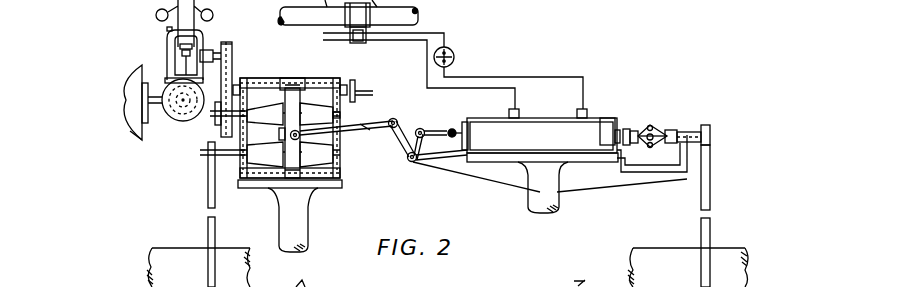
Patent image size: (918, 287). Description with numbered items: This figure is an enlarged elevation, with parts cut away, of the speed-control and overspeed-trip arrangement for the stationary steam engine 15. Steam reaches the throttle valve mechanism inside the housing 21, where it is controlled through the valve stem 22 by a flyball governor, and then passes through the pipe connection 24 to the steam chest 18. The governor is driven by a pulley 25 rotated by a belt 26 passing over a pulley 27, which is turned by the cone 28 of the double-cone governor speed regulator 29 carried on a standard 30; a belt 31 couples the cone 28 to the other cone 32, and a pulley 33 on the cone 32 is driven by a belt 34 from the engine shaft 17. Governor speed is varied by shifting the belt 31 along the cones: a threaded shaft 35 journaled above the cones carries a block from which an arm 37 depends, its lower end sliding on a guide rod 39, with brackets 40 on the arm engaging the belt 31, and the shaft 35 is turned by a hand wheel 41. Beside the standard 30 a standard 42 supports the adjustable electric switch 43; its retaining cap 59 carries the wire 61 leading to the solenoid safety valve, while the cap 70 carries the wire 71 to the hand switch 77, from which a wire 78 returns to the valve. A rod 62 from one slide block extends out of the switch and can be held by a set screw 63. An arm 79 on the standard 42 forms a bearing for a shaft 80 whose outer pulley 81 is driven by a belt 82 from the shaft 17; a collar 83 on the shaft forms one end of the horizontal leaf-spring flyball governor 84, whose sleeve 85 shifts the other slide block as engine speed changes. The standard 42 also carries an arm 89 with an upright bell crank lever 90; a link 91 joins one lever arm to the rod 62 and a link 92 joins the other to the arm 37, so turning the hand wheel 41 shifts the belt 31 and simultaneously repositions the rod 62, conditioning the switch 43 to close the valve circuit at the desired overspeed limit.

The stationary steam engine 15 is at (126, 138).
The shaft 17 is at (157, 260).
The steam chest 18 is at (133, 100).
The housing 21 is at (183, 122).
The valve stem 22 is at (185, 70).
The pipe connection 24 is at (156, 105).
The pulley 25 is at (232, 47).
The belt 26 is at (228, 73).
The pulley 27 is at (219, 124).
The cone 28 is at (323, 124).
The double-cone type governor speed regulator 29 is at (347, 192).
The standard 30 is at (295, 226).
The belt 31 is at (280, 115).
The cone 32 is at (325, 152).
The pulley 33 is at (207, 168).
The belt 34 is at (207, 229).
The threaded shaft 35 is at (312, 84).
The arm 37 is at (290, 79).
The guide rod 39 is at (340, 172).
The brackets 40 is at (279, 135).
The hand wheel 41 is at (368, 92).
The standard 42 is at (541, 198).
The adjustable electric switch 43 is at (486, 188).
The retaining cap 59 is at (519, 115).
The wire 61 is at (515, 97).
The rod 62 is at (455, 130).
The set screw 63 is at (468, 125).
The cap 70 is at (587, 112).
The wire 71 is at (584, 90).
The hand switch 77 is at (454, 56).
The wire 78 is at (440, 33).
The arm 79 is at (603, 182).
The shaft 80 is at (679, 133).
The pulley 81 is at (712, 125).
The belt 82 is at (711, 172).
The collar 83 is at (669, 130).
The flyball governor 84 is at (650, 126).
The sleeve 85 is at (634, 128).
The arm 89 is at (453, 173).
The bell crank lever 90 is at (399, 140).
The link 91 is at (433, 131).
The link 92 is at (367, 128).